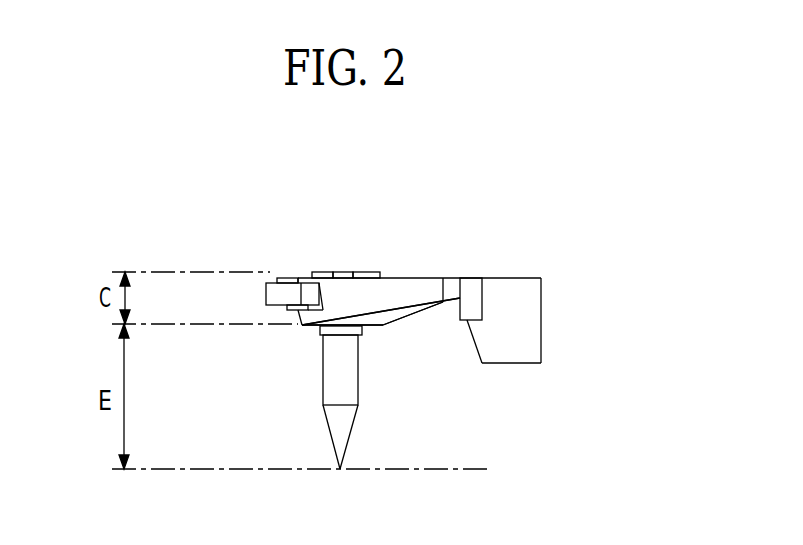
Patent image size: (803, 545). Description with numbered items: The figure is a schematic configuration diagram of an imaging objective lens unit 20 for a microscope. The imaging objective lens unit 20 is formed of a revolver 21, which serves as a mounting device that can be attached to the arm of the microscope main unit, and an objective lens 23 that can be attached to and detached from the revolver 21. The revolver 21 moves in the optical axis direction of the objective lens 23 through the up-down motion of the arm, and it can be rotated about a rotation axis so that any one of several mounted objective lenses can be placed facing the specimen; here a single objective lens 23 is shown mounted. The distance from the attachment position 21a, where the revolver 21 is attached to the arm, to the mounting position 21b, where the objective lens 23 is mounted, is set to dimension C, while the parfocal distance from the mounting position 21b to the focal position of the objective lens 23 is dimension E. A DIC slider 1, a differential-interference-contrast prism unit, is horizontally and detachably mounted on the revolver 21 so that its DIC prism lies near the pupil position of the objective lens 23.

The imaging objective lens unit 20 is at (580, 165).
The revolver 21 is at (440, 265).
The attachment position 21a is at (328, 273).
The mounting positions 21b is at (305, 341).
The DIC slider 1 is at (286, 293).
The objective lens 23 is at (345, 378).